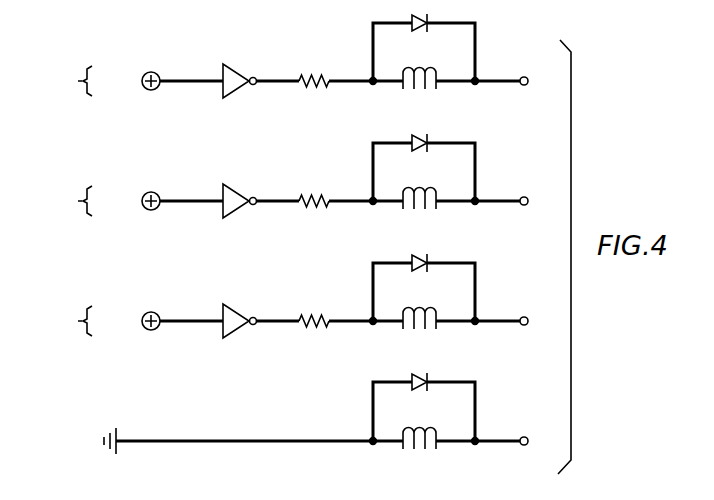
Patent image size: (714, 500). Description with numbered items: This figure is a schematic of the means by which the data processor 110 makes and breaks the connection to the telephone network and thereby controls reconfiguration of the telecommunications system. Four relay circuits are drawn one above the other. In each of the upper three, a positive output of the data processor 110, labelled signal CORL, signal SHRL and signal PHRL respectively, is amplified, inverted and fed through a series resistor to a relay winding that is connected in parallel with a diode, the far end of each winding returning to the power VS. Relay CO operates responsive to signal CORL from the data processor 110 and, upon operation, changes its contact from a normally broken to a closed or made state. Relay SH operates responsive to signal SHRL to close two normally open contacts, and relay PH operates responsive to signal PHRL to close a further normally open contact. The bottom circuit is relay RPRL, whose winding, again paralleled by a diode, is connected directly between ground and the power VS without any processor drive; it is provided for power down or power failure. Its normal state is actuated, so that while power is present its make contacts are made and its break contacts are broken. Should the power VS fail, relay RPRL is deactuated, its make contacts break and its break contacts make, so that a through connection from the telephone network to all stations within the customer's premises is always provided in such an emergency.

The data processor 110 is at (58, 209).
The signal CORL is at (127, 80).
The signal SHRL is at (127, 200).
The signal PHRL is at (127, 320).
The relay CO is at (424, 65).
The relay SH is at (424, 185).
The relay PH is at (424, 305).
The relay RPRL is at (424, 426).
The power VS is at (514, 265).